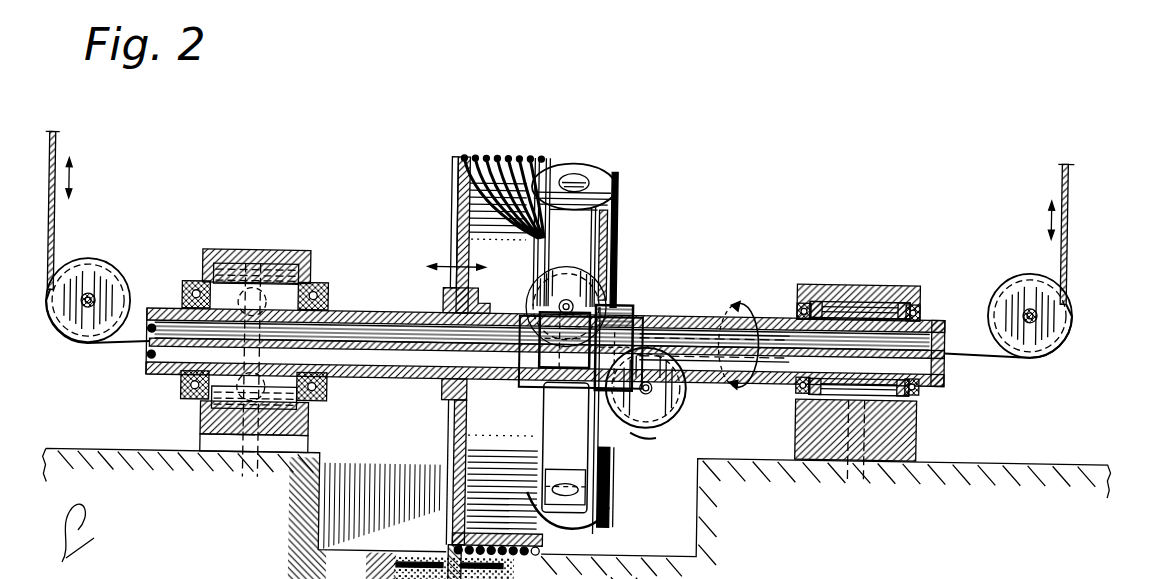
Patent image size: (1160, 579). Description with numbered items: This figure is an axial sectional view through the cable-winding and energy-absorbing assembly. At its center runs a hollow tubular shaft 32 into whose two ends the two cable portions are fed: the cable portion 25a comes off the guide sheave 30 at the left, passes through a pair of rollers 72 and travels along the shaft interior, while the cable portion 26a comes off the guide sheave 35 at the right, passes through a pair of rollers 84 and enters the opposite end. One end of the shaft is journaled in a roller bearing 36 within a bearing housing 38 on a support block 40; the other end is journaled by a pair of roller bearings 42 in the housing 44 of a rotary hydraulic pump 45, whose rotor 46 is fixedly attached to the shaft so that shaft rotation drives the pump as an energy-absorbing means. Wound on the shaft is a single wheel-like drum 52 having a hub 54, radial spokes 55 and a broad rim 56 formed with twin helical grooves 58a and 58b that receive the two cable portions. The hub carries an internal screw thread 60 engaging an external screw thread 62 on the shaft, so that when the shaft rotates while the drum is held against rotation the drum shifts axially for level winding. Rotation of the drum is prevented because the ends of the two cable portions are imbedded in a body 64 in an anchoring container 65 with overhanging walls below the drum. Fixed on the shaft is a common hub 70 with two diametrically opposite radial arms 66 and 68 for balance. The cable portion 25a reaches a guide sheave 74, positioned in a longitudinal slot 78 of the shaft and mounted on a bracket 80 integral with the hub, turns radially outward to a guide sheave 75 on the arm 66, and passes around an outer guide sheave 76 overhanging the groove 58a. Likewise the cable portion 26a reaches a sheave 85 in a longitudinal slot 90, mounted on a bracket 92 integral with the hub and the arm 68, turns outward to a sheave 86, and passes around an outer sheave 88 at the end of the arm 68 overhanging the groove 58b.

The cable portion 25a is at (53, 230).
The cable portion 26a is at (671, 310).
The guide sheave 30 is at (90, 270).
The tubular shaft 32 is at (728, 300).
The guide sheave 35 is at (1012, 268).
The roller bearing 36 is at (895, 290).
The bearing housing 38 is at (838, 274).
The support block 40 is at (900, 410).
The roller bearings 42 is at (196, 280).
The housing 44 is at (312, 420).
The rotary hydraulic pump 45 is at (231, 248).
The rotor 46 is at (282, 290).
The drum 52 is at (497, 152).
The hub 54 is at (443, 292).
The radial spokes 55 is at (455, 226).
The broad rim 56 is at (450, 168).
The helical groove 58a is at (530, 300).
The helical groove 58b is at (536, 244).
The internal screw thread 60 is at (450, 400).
The external screw thread 62 is at (443, 380).
The body 64 is at (510, 558).
The anchoring container 65 is at (483, 568).
The radial arm 66 is at (598, 262).
The radial arm 68 is at (592, 430).
The hub 70 is at (620, 298).
The rollers 72 is at (147, 346).
The guide sheave 74 is at (565, 262).
The guide sheave 75 is at (618, 200).
The outer guide sheave 76 is at (585, 168).
The longitudinal slot 78 is at (520, 368).
The bracket 80 is at (564, 340).
The rollers 84 is at (945, 360).
The sheave 85 is at (687, 405).
The sheave 86 is at (616, 470).
The outer sheave 88 is at (578, 522).
The longitudinal slot 90 is at (672, 390).
The bracket 92 is at (632, 426).